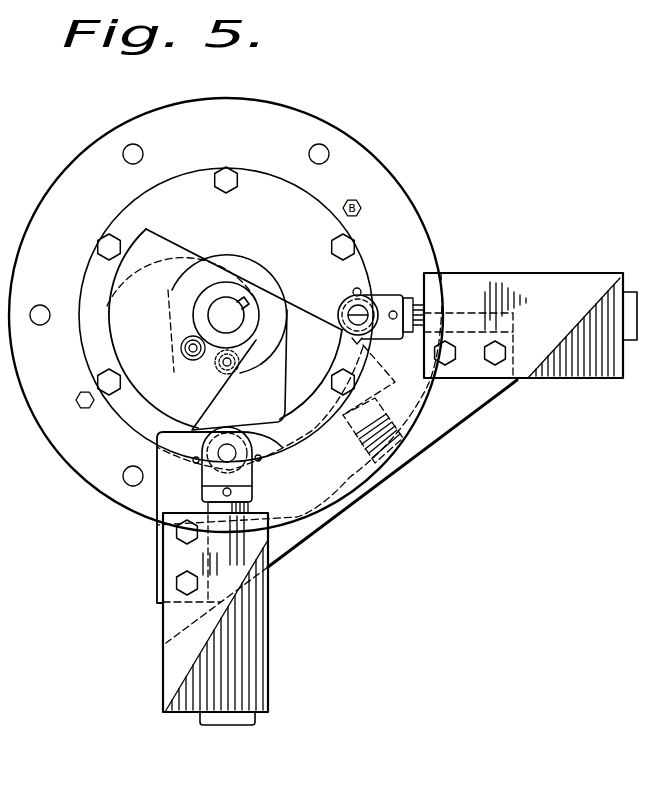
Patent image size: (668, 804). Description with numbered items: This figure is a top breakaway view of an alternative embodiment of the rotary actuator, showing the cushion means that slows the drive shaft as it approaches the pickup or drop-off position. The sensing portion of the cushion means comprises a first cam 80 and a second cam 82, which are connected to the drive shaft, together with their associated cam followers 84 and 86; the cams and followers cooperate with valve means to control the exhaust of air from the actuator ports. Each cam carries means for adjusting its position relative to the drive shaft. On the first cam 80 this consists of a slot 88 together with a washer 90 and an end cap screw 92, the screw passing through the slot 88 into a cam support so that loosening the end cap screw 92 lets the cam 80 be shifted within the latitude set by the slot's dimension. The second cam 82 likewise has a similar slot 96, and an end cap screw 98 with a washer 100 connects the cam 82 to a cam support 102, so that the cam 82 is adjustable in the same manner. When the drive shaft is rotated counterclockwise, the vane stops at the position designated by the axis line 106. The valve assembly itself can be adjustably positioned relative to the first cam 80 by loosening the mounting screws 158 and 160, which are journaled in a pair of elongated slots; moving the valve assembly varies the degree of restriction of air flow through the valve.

The first cam 80 is at (178, 238).
The second cam 82 is at (273, 365).
The cam follower 84 is at (338, 300).
The cam follower 86 is at (277, 449).
The slot 88 is at (184, 342).
The washer 90 is at (185, 352).
The end cap screw 92 is at (185, 358).
The slot 96 is at (239, 370).
The end cap screw 98 is at (215, 376).
The washer 100 is at (210, 370).
The cam support 102 is at (252, 263).
The axis line 106 is at (76, 396).
The mounting screw 158 is at (455, 362).
The mounting screw 160 is at (505, 362).